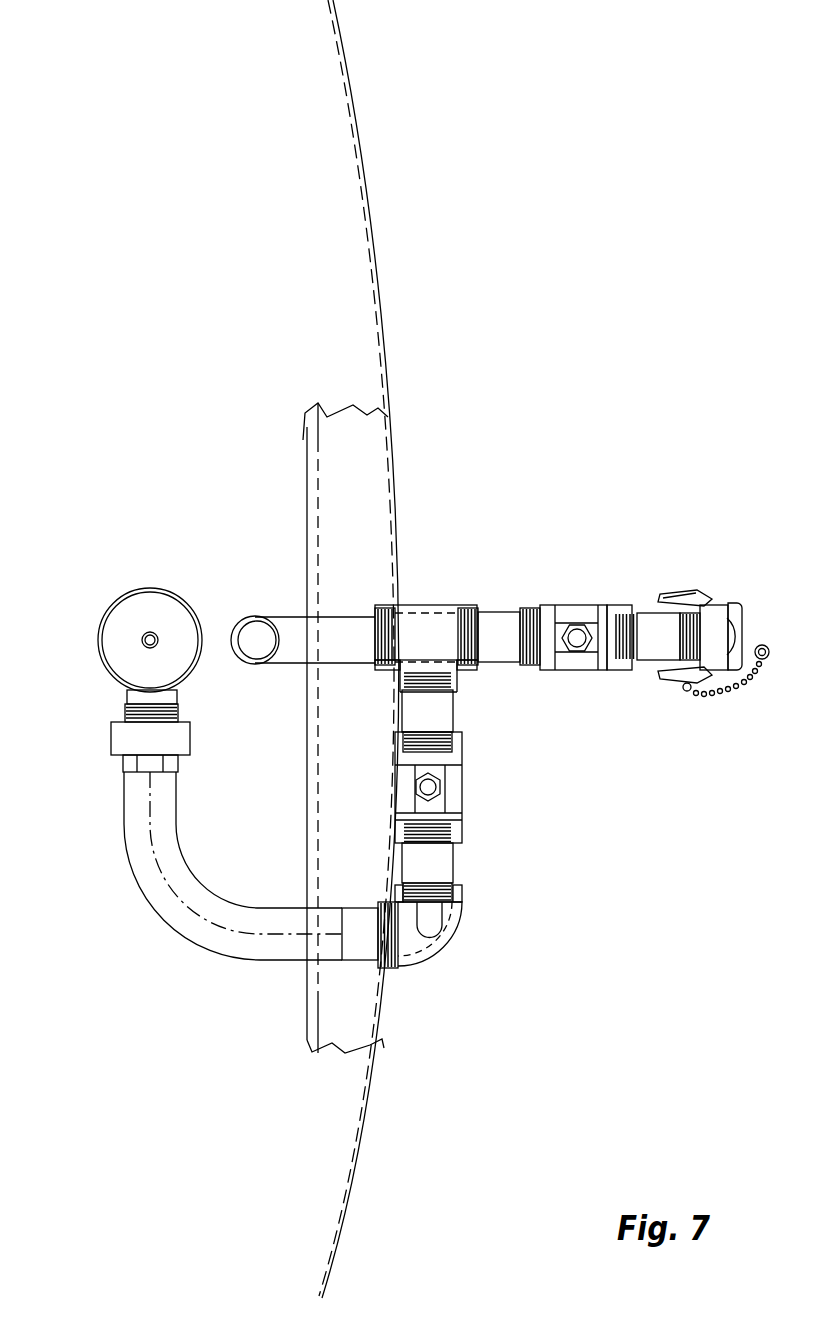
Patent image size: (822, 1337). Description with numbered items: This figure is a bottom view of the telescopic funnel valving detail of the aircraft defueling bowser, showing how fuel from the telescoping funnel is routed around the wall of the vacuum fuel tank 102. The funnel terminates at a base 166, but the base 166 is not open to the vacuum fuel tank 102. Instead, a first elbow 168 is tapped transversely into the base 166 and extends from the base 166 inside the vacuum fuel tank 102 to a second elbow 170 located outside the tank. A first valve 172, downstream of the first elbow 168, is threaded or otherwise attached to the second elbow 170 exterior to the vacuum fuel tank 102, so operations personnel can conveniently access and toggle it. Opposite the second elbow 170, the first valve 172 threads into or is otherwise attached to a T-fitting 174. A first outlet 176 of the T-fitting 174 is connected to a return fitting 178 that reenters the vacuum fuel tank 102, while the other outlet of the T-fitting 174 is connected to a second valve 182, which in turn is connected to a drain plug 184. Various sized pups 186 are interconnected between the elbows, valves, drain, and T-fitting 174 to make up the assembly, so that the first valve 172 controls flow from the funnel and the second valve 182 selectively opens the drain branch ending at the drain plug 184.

The vacuum fuel tank 102 is at (283, 290).
The base 166 is at (123, 598).
The first elbow 168 is at (155, 903).
The second elbow 170 is at (452, 928).
The first valve 172 is at (458, 792).
The T-fitting 174 is at (428, 627).
The first outlet 176 is at (400, 614).
The return fitting 178 is at (292, 632).
The second valve 182 is at (582, 606).
The drain plug 184 is at (716, 613).
The pups 186 is at (502, 626).